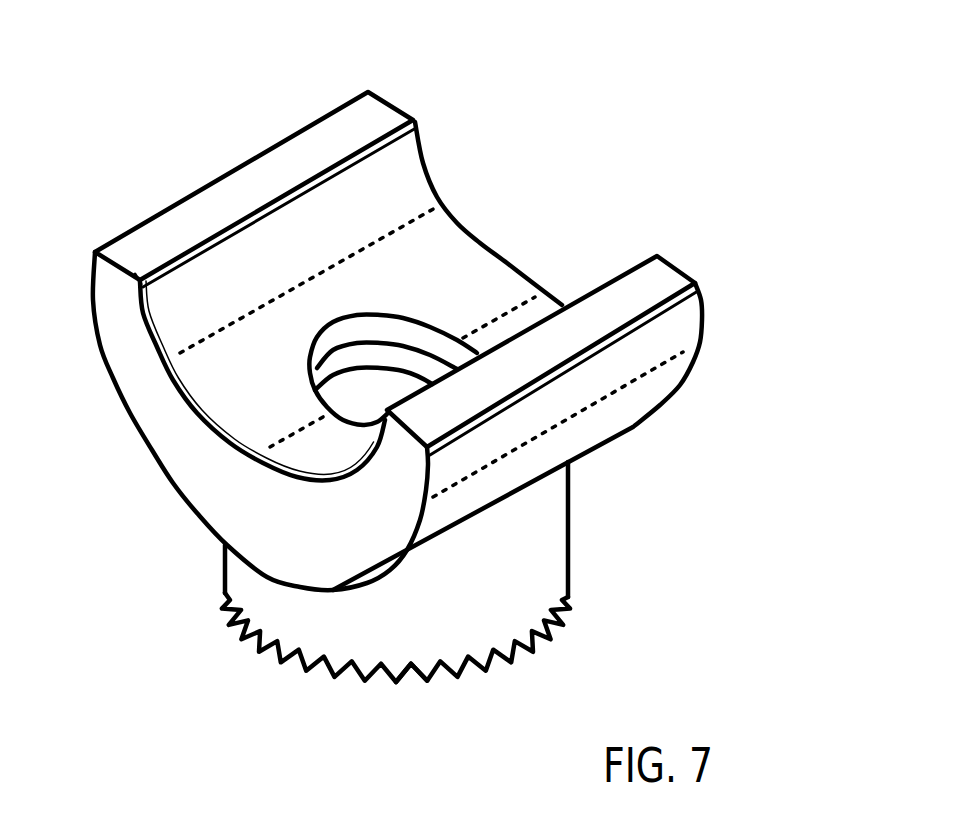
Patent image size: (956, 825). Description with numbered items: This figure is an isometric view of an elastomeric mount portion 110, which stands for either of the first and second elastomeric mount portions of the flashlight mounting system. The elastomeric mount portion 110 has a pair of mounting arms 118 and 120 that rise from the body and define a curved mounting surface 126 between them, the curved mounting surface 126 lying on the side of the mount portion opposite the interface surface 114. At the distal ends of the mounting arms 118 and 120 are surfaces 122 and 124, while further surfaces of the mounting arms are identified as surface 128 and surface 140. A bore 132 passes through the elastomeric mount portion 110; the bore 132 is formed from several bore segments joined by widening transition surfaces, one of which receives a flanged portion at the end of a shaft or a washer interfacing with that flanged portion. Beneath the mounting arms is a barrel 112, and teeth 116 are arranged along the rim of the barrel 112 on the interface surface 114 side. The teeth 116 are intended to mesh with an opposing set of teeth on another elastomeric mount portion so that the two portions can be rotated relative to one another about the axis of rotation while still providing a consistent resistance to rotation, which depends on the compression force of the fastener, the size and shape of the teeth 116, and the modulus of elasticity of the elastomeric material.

The elastomeric mount portion 110 is at (592, 153).
The barrel 112 is at (555, 553).
The interface surface 114 is at (501, 669).
The teeth 116 is at (410, 680).
The mounting arm 118 is at (127, 360).
The mounting arm 120 is at (683, 330).
The surface 122 is at (367, 123).
The surface 124 is at (627, 293).
The curved mounting surface 126 is at (298, 243).
The surface of mounting arm 128 is at (475, 444).
The bore 132 is at (384, 399).
The surface of mounting arm 140 is at (304, 540).